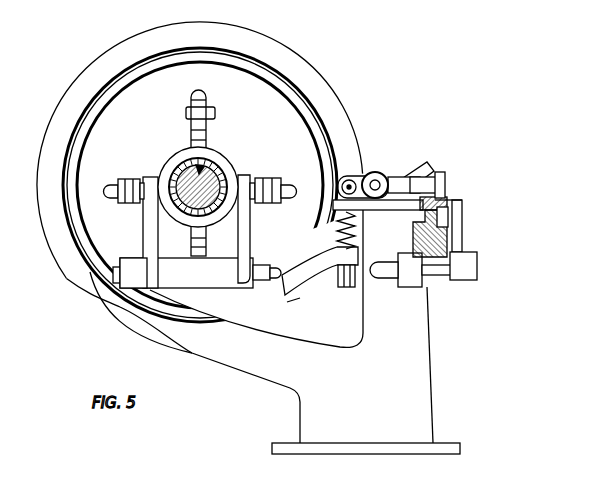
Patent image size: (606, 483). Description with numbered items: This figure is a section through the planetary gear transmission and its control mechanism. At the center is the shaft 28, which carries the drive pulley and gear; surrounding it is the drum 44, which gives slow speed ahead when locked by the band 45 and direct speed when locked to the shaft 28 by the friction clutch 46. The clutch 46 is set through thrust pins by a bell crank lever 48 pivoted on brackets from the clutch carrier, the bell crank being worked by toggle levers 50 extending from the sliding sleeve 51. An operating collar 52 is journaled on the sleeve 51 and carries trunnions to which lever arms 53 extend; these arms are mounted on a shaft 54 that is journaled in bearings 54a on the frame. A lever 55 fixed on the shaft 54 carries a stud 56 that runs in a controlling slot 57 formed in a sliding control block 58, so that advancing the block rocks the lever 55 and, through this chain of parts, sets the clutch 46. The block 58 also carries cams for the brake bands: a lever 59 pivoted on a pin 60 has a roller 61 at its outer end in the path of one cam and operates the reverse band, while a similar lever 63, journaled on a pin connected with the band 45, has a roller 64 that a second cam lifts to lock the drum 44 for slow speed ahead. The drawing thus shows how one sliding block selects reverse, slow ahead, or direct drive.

The shaft 28 is at (212, 171).
The drum 44 is at (310, 120).
The band 45 is at (327, 127).
The clutch 46 is at (242, 95).
The bell crank lever 48 is at (193, 96).
The toggle levers 50 is at (187, 120).
The sliding sleeve 51 is at (186, 152).
The operating collar 52 is at (177, 165).
The lever arms 53 is at (145, 215).
The shaft 54 is at (266, 267).
The bearings 54a is at (138, 267).
The lever 55 is at (461, 227).
The stud 56 is at (446, 213).
The controlling slot 57 is at (438, 200).
The sliding control block 58 is at (446, 242).
The lever 59 is at (399, 145).
The pin 60 is at (376, 178).
The roller 61 is at (428, 159).
The lever 63 is at (403, 155).
The roller 64 is at (444, 184).